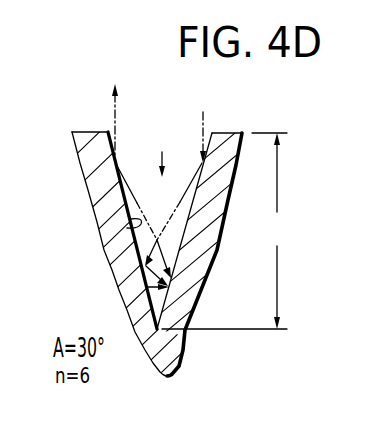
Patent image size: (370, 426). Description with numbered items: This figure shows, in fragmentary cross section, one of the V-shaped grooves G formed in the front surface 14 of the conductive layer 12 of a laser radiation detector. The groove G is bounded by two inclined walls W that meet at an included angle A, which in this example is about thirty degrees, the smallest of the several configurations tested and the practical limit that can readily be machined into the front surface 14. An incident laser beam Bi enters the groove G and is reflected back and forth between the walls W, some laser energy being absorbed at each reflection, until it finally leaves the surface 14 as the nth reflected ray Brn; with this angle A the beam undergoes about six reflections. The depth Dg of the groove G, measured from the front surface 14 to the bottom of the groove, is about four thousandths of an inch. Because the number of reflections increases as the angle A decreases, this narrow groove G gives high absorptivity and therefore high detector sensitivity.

The conductive layer 12 is at (87, 164).
The front surface 14 is at (93, 131).
The nth reflected ray Brn is at (113, 107).
The incident laser beam Bi is at (203, 88).
The groove G is at (162, 152).
The wall W is at (136, 222).
The included angle A is at (158, 303).
The depth Dg is at (228, 231).